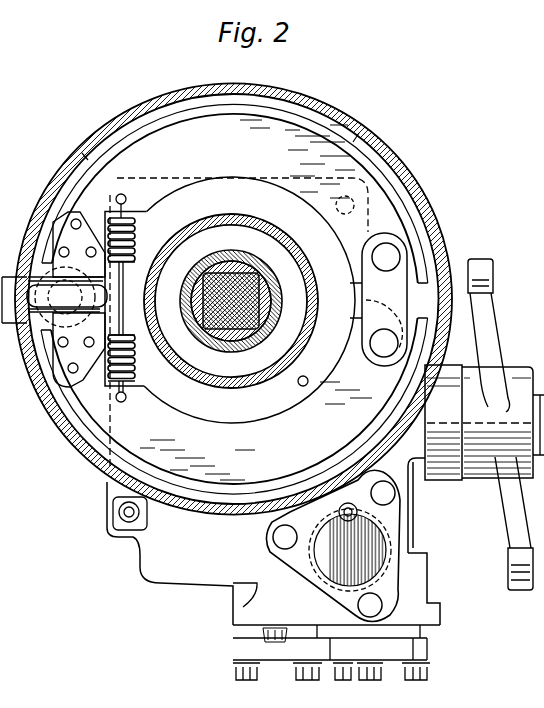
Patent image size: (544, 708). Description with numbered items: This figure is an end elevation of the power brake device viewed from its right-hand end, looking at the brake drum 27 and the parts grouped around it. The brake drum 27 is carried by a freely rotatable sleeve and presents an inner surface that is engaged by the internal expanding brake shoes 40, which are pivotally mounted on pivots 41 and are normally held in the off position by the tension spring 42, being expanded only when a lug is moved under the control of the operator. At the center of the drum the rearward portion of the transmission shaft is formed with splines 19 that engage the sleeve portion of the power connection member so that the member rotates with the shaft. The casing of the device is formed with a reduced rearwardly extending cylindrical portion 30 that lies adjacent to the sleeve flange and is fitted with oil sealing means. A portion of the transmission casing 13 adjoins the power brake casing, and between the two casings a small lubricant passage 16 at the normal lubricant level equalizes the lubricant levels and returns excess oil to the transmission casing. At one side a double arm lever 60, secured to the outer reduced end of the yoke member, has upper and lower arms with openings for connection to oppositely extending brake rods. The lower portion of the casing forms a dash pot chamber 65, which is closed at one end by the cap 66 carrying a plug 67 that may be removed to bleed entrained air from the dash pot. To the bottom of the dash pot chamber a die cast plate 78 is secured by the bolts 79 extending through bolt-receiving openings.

The transmission casing 13 is at (43, 290).
The lubricant passage 16 is at (304, 386).
The splines 19 is at (272, 313).
The brake drum 27 is at (395, 162).
The reduced rearwardly extending portion of the casing 30 is at (238, 300).
The internal expanding brake shoes 40 is at (312, 155).
The pivots 41 is at (392, 253).
The tension spring 42 is at (107, 368).
The double arm lever 60 is at (510, 505).
The dash pot chamber 65 is at (257, 607).
The cap 66 is at (402, 537).
The plug 67 is at (333, 545).
The die cast plate 78 is at (278, 650).
The bolts 79 is at (350, 678).